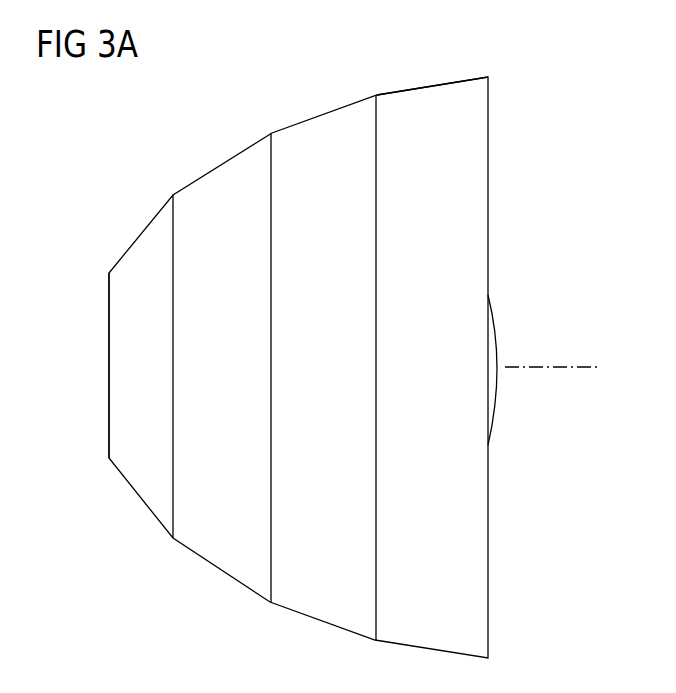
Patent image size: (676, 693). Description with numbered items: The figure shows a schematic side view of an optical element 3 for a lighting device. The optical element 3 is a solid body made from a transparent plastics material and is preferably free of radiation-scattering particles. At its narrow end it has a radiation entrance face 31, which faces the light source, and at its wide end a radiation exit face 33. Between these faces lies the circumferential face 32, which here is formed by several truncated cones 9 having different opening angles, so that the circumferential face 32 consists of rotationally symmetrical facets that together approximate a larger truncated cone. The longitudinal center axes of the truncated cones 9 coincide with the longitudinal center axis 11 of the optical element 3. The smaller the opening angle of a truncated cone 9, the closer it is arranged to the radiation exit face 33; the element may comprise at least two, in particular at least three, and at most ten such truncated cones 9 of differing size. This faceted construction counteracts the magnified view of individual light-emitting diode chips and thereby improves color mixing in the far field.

The optical element 3 is at (199, 159).
The truncated cone 9 is at (147, 379).
The longitudinal center axis 11 is at (580, 367).
The radiation entrance face 31 is at (506, 341).
The circumferential face 32 is at (424, 88).
The radiation exit face 33 is at (107, 367).